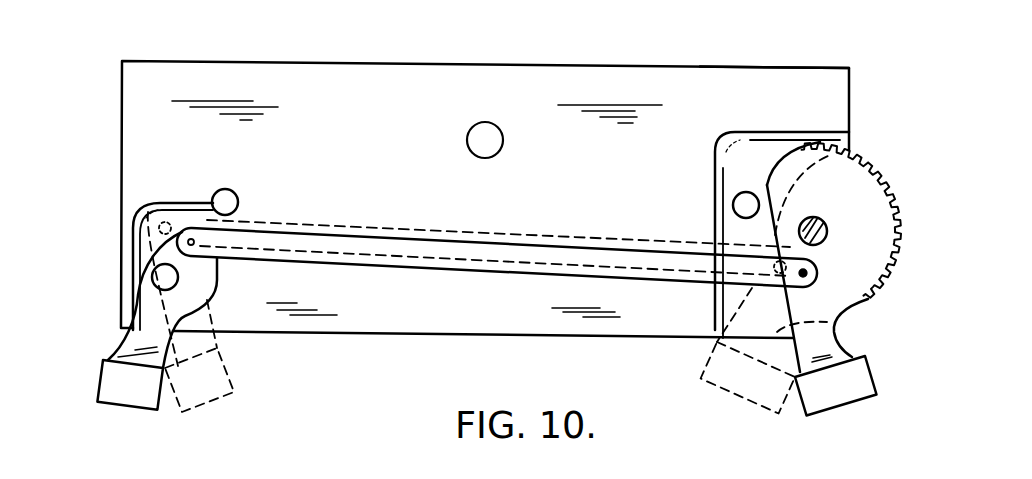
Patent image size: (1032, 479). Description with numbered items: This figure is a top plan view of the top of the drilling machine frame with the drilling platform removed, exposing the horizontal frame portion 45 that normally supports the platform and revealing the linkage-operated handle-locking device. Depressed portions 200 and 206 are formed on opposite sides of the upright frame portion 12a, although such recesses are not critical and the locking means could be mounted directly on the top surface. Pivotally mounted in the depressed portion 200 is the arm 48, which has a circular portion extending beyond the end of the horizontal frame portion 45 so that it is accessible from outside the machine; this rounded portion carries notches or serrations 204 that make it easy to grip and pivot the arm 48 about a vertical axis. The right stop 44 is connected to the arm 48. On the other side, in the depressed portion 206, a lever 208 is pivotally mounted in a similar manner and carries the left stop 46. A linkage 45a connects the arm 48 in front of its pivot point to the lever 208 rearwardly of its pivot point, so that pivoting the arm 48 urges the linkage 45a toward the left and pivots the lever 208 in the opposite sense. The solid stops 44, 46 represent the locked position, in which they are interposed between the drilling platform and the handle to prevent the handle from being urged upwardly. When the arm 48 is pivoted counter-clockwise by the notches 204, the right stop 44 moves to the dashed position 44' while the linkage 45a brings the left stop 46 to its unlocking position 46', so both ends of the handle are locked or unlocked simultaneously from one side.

The horizontal frame portion 45 is at (286, 78).
The upright frame portion 12a is at (766, 86).
The depressed portion 200 is at (845, 145).
The notches or serrations 204 is at (887, 200).
The depressed portion 206 is at (133, 232).
The lever 208 is at (135, 343).
The linkage 45a is at (485, 262).
The arm 48 is at (866, 264).
The right stop 44 is at (852, 386).
The dashed stop position 44' is at (737, 388).
The left stop 46 is at (129, 407).
The unlocking position 46' is at (212, 393).